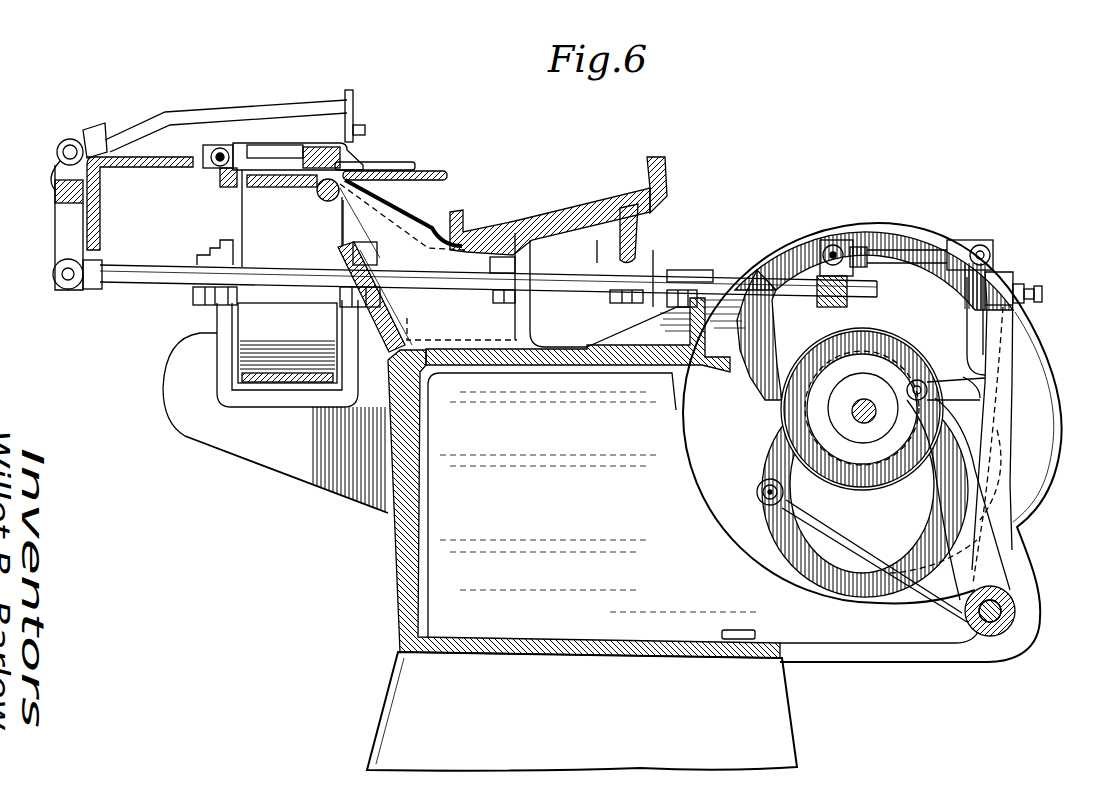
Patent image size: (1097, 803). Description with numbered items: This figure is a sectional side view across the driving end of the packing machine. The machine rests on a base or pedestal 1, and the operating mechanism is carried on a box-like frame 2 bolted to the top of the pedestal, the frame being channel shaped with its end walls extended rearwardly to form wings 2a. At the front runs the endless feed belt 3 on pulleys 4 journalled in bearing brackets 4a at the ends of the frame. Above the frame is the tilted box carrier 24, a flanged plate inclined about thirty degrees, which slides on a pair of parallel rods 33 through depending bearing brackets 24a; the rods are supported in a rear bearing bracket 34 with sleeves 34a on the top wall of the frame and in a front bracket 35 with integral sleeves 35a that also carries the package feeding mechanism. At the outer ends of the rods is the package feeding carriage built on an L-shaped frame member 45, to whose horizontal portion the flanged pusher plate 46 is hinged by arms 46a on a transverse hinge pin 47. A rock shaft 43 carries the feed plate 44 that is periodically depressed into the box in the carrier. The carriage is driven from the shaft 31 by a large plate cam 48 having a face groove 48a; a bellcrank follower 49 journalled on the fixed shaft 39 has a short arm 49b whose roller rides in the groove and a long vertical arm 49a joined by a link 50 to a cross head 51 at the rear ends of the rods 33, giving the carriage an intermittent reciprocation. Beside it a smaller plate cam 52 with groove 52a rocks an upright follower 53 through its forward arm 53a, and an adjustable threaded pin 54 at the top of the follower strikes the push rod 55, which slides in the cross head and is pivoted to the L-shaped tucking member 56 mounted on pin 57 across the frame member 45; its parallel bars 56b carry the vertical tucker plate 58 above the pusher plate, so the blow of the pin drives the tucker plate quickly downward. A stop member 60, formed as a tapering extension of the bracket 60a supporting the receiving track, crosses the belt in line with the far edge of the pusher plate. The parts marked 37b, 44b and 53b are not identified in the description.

The base or pedestal 1 is at (387, 718).
The box-like frame 2 is at (420, 573).
The wings 2a is at (893, 642).
The endless feed belt 3 is at (283, 387).
The pulleys 4 is at (247, 332).
The bearing brackets 4a is at (207, 437).
The box carrier 24 is at (577, 223).
The bearing brackets 24a is at (643, 260).
The shaft 31 is at (860, 400).
The sliding rods 33 is at (720, 283).
The bearing bracket 34 is at (643, 338).
The bearing sleeves 34a is at (684, 273).
The bearing bracket 35 is at (390, 440).
The bearing sleeves 35a is at (380, 270).
The hook member 37b is at (972, 365).
The bearing shaft 39 is at (1020, 640).
The rock shaft 43 is at (322, 197).
The feed plate 44 is at (442, 173).
The bar extension 44b is at (383, 164).
The L-shaped frame member 45 is at (140, 170).
The pusher plate 46 is at (312, 152).
The arms 46a is at (240, 153).
The hinge pin 47 is at (213, 167).
The plate cam 48 is at (1043, 447).
The groove 48a is at (777, 560).
The cam follower 49 is at (967, 313).
The longer arm 49a is at (970, 493).
The shorter arm 49b is at (843, 530).
The link 50 is at (905, 246).
The cross head 51 is at (840, 305).
The plate cam 52 is at (923, 368).
The cam groove 52a is at (790, 427).
The cam follower 53 is at (1013, 387).
The forwardly extending arm 53a is at (955, 391).
The arm hook 53b is at (950, 499).
The threaded pin 54 is at (1030, 290).
The push rod 55 is at (550, 293).
The package-tucking member 56 is at (55, 195).
The round bars 56b is at (233, 106).
The pin 57 is at (72, 137).
The tucker plate 58 is at (356, 112).
The stop member 60 is at (270, 130).
The bracket 60a is at (415, 227).